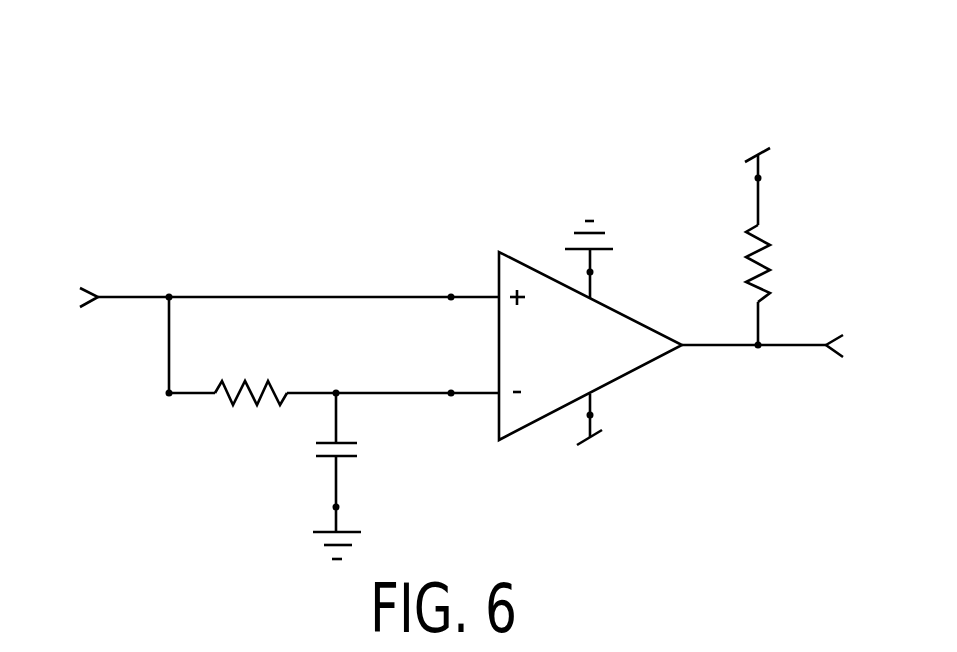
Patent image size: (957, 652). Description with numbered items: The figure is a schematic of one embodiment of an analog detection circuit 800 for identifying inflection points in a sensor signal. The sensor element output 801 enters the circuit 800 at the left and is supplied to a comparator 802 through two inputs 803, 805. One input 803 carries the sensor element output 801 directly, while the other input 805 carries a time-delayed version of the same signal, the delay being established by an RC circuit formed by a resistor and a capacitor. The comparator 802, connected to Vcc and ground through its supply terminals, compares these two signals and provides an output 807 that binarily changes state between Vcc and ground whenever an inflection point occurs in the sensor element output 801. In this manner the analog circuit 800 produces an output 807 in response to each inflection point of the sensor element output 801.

The analog detection circuit 800 is at (273, 90).
The sensor element output 801 is at (94, 300).
The comparator 802 is at (523, 258).
The comparator input 803 is at (333, 270).
The comparator input 805 is at (393, 420).
The output 807 is at (791, 348).